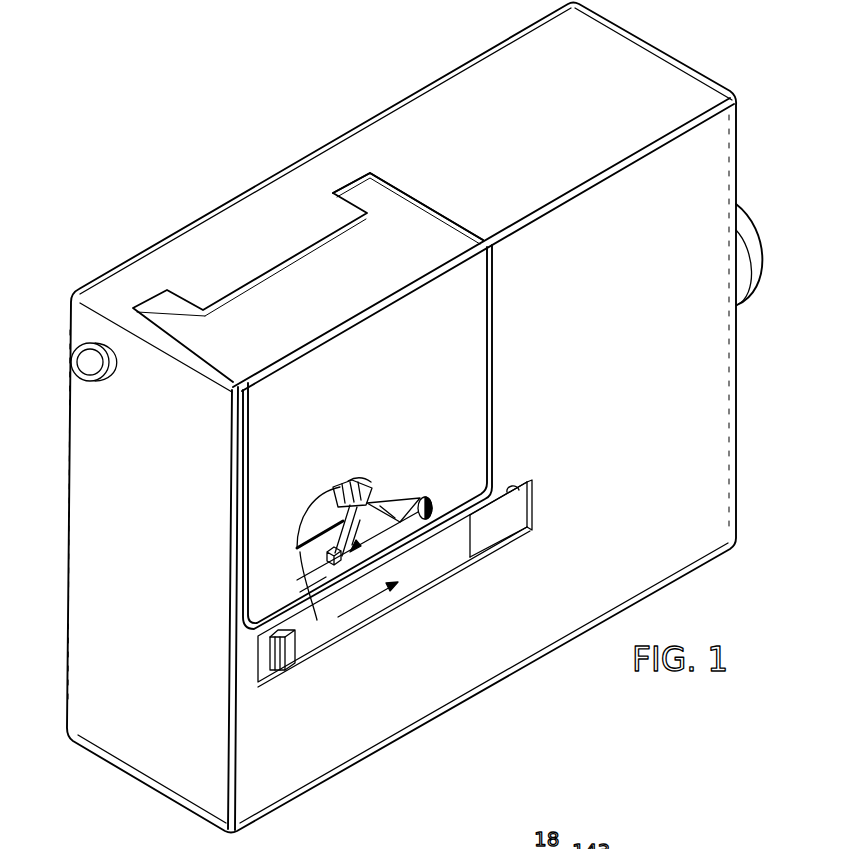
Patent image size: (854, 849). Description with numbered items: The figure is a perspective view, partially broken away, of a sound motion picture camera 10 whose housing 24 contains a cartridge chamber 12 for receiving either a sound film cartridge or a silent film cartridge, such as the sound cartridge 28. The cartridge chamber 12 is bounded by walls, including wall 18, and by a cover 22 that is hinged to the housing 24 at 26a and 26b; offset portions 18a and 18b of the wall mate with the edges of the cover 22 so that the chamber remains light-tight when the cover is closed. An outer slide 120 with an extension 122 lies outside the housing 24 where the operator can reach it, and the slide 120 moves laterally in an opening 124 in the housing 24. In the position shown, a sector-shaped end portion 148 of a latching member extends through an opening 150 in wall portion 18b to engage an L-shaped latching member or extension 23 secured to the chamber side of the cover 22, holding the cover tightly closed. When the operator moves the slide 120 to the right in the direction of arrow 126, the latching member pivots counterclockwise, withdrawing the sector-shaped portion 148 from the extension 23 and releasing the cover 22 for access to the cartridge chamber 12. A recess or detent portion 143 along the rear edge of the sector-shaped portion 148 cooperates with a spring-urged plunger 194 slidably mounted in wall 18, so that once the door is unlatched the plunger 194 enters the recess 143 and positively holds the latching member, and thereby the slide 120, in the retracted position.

The sound motion picture camera 10 is at (677, 94).
The cartridge chamber 12 is at (298, 532).
The wall 18 is at (388, 505).
The offset portion 18a is at (317, 563).
The offset portion 18b is at (317, 575).
The cover 22 is at (436, 349).
The L-shaped latching member or extension 23 is at (352, 486).
The housing 24 is at (598, 311).
The hinge 26a is at (168, 293).
The hinge 26b is at (372, 176).
The sound cartridge 28 is at (310, 530).
The outer slide 120 is at (450, 565).
The extension 122 is at (288, 668).
The opening 124 is at (532, 486).
The arrow 126 is at (378, 598).
The recess or detent portion 143 is at (338, 497).
The sector-shaped end portion 148 is at (364, 518).
The opening 150 is at (421, 498).
The plunger 194 is at (315, 571).